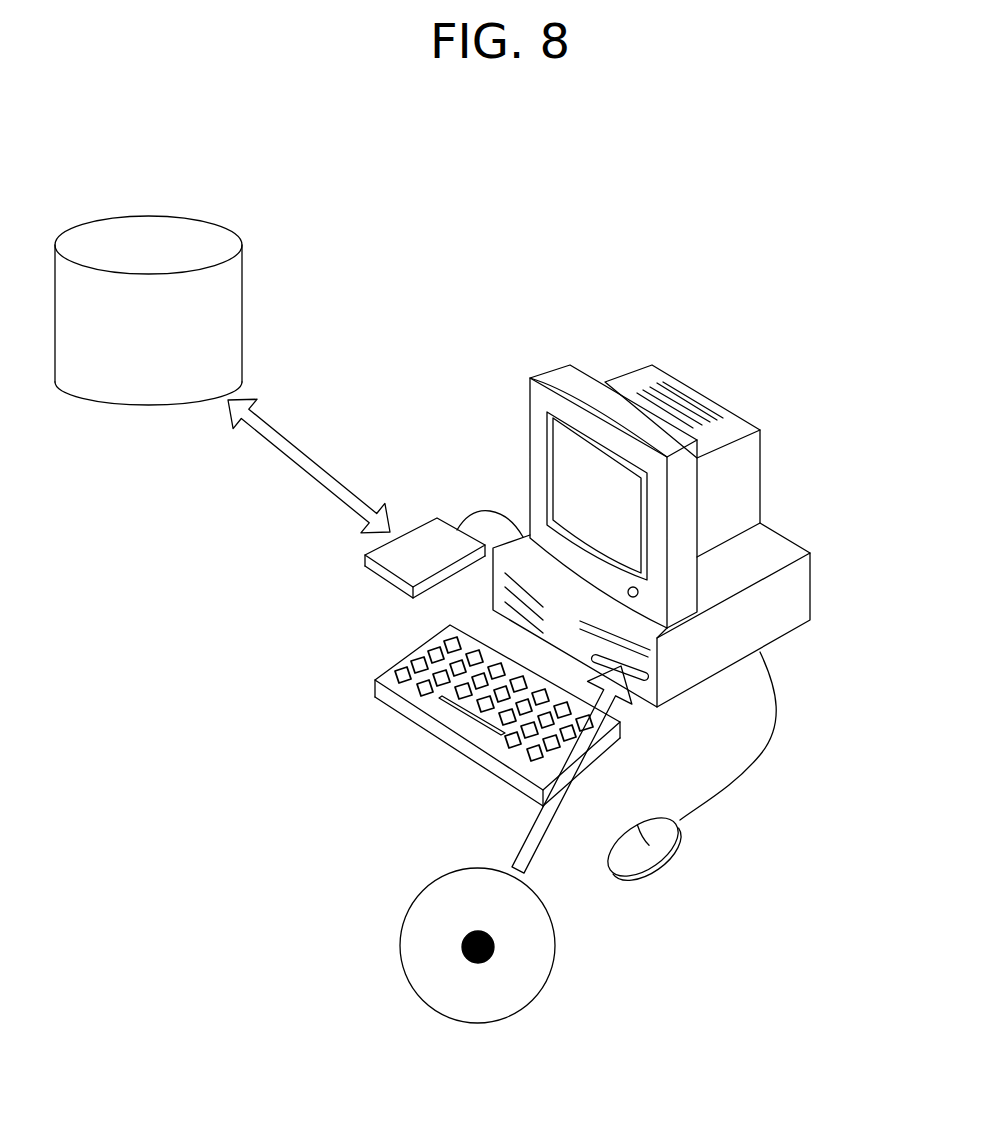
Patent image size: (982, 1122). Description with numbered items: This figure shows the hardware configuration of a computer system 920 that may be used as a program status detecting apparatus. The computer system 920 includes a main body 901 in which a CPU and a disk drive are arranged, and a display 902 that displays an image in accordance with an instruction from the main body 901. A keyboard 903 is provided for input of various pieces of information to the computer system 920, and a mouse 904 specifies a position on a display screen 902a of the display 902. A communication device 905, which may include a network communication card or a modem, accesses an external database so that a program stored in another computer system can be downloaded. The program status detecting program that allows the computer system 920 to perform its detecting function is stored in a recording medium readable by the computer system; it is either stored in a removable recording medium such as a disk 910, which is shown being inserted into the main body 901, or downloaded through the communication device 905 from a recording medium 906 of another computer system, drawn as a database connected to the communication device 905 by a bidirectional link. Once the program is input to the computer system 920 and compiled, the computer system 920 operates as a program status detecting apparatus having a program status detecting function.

The main body 901 is at (810, 592).
The display 902 is at (644, 496).
The display screen 902a is at (547, 477).
The keyboard 903 is at (440, 733).
The mouse 904 is at (673, 861).
The communication device 905 is at (377, 577).
The recording medium 906 is at (243, 296).
The disk 910 is at (553, 973).
The computer system 920 is at (756, 366).